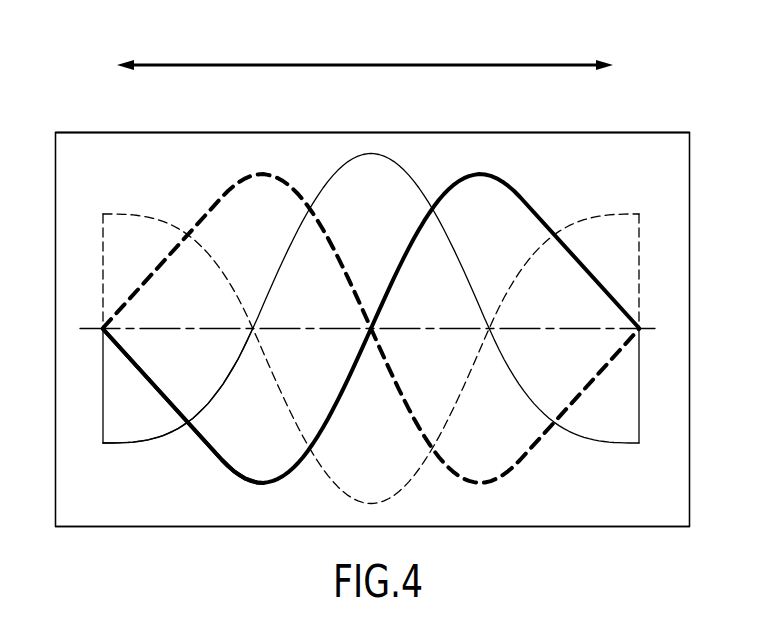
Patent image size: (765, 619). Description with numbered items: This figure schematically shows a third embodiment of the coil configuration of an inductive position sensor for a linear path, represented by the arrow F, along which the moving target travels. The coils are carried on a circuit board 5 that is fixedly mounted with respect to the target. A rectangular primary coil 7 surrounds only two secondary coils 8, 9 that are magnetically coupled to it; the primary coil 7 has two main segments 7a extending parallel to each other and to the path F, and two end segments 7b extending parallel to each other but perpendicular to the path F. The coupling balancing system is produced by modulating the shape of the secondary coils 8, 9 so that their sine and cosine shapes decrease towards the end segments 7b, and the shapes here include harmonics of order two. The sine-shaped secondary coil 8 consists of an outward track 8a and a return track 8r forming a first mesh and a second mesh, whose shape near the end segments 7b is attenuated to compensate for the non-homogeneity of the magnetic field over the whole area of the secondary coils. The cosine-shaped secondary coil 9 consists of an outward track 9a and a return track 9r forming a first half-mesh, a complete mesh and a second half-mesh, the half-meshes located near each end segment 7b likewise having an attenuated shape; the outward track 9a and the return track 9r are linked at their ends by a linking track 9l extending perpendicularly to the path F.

The path F is at (364, 63).
The circuit board 5 is at (364, 132).
The primary coil 7 is at (522, 131).
The main segments 7a is at (184, 132).
The end segments 7b is at (56, 465).
The sine-shaped secondary coil 8 is at (288, 489).
The outward track 8a is at (221, 462).
The return track 8r is at (533, 450).
The cosine-shaped secondary coil 9 is at (281, 251).
The outward track 9a is at (216, 393).
The return track 9r is at (606, 213).
The linking track 9l is at (103, 405).